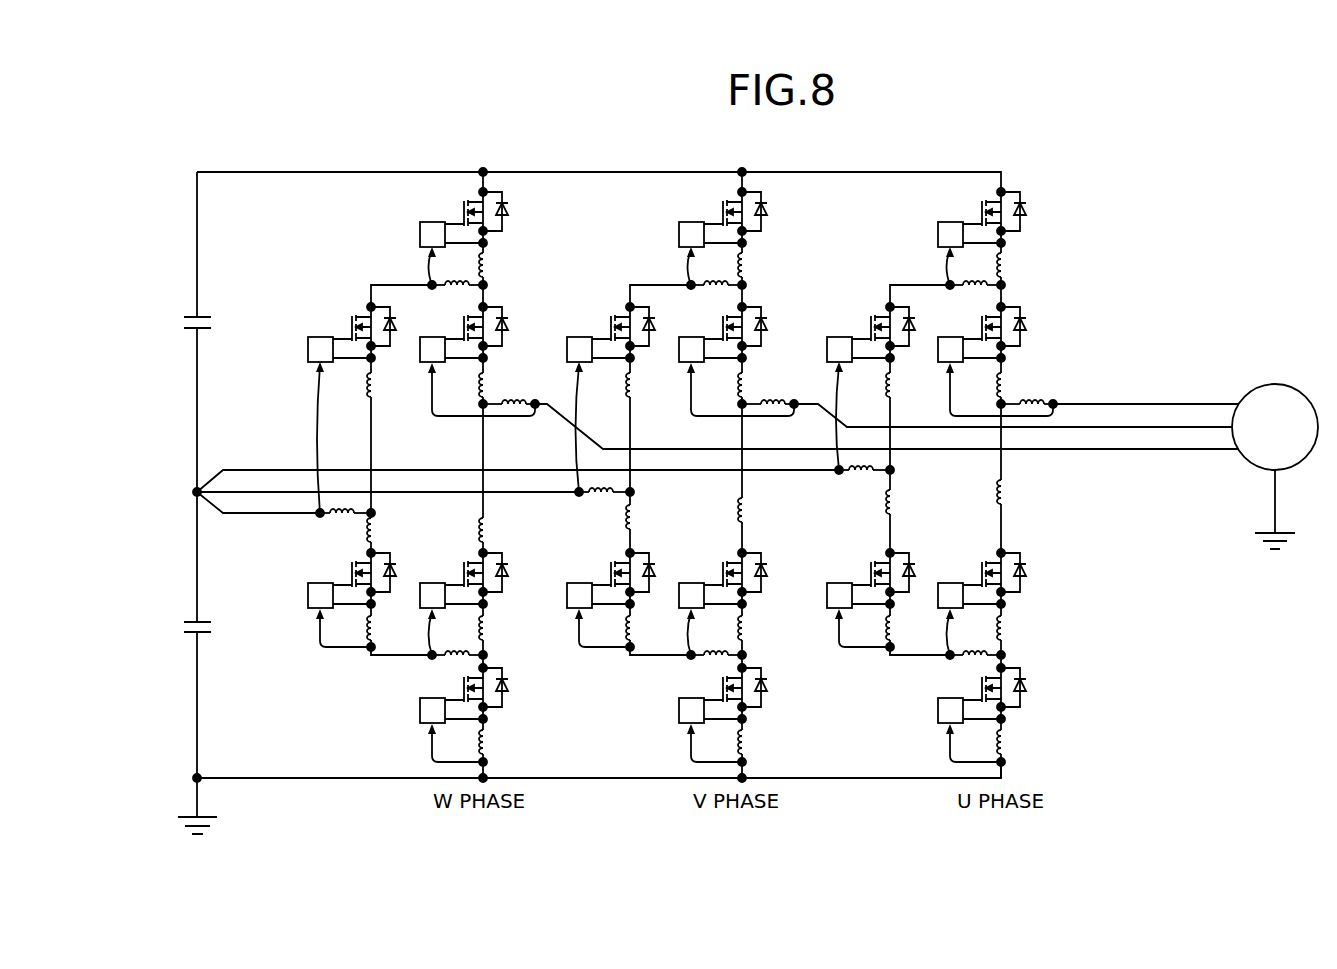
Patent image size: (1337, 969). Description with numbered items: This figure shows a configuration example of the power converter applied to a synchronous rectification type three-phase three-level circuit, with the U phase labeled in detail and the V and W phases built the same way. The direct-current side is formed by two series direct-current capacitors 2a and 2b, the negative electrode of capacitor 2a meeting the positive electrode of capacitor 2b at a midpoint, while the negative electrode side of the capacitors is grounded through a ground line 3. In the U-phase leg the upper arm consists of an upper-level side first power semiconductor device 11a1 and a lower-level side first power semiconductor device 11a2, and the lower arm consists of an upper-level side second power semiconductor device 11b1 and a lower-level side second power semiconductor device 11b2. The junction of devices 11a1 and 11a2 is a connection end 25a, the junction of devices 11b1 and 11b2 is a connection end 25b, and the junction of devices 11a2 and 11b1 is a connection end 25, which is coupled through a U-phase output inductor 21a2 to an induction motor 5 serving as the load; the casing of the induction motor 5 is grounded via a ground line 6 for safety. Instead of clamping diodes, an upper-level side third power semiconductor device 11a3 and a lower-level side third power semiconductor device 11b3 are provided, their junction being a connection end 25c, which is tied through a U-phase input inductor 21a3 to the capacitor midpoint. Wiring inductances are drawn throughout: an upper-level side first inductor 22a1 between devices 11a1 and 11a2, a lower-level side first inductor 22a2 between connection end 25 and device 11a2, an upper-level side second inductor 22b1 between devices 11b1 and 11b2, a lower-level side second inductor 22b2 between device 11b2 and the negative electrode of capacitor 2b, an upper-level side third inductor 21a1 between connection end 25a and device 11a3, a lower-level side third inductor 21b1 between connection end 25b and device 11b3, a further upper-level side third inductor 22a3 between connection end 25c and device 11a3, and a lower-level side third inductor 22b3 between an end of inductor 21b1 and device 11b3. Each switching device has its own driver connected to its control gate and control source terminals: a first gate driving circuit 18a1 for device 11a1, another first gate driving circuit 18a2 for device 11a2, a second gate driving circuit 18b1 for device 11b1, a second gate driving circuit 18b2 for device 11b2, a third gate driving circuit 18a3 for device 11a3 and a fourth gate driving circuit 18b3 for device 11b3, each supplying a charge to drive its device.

The direct-current capacitor 2a is at (190, 314).
The direct-current capacitor 2b is at (190, 619).
The ground line 3 is at (197, 800).
The induction motor 5 is at (1292, 386).
The ground line 6 is at (1277, 500).
The upper-level side first power semiconductor device 11a1 is at (1042, 210).
The lower-level side first power semiconductor device 11a2 is at (1042, 323).
The upper-level side third power semiconductor device 11a3 is at (853, 318).
The upper-level side second power semiconductor device 11b1 is at (1042, 572).
The lower-level side second power semiconductor device 11b2 is at (1042, 686).
The lower-level side third power semiconductor device 11b3 is at (854, 564).
The first gate driving circuit 18a1 is at (947, 220).
The first gate driving circuit 18a2 is at (947, 337).
The third gate driving circuit 18a3 is at (826, 350).
The second gate driving circuit 18b1 is at (950, 582).
The second gate driving circuit 18b2 is at (938, 709).
The fourth gate driving circuit 18b3 is at (828, 602).
The upper-level side third inductor 21a1 is at (976, 292).
The U-phase output inductor 21a2 is at (1030, 396).
The U-phase input inductor 21a3 is at (858, 476).
The lower-level side third inductor 21b1 is at (985, 648).
The upper-level side first inductor 22a1 is at (1004, 267).
The lower-level side first inductor 22a2 is at (1005, 383).
The upper-level side third inductor 22a3 is at (893, 385).
The upper-level side second inductor 22b1 is at (1005, 622).
The lower-level side second inductor 22b2 is at (1005, 737).
The lower-level side third inductor 22b3 is at (878, 632).
The connection end 25 is at (1000, 410).
The connection end 25a is at (990, 281).
The connection end 25b is at (995, 658).
The connection end 25c is at (895, 475).